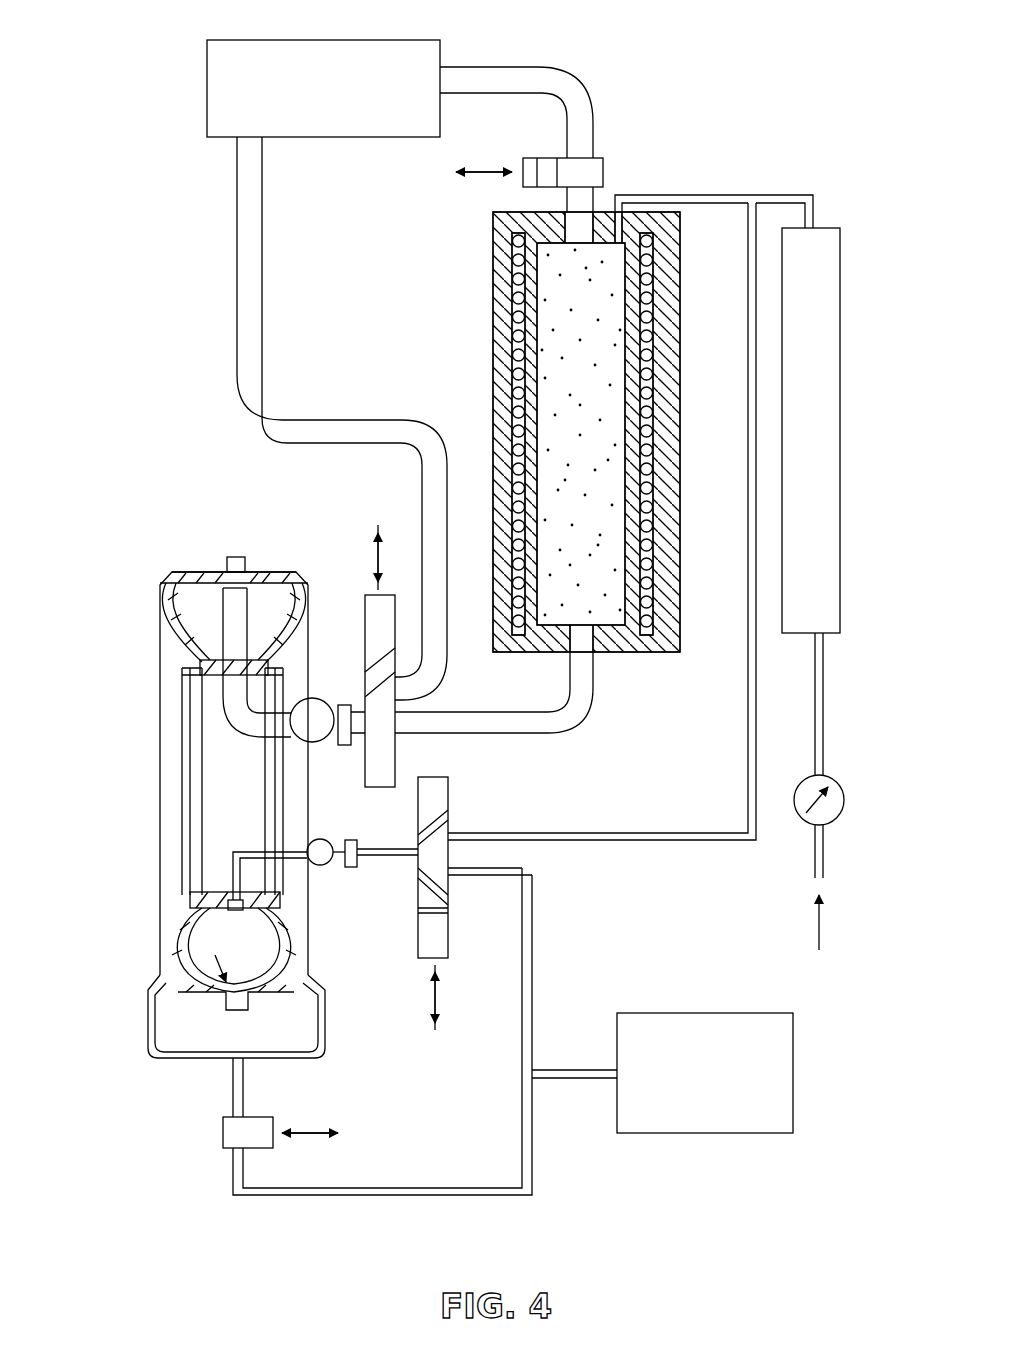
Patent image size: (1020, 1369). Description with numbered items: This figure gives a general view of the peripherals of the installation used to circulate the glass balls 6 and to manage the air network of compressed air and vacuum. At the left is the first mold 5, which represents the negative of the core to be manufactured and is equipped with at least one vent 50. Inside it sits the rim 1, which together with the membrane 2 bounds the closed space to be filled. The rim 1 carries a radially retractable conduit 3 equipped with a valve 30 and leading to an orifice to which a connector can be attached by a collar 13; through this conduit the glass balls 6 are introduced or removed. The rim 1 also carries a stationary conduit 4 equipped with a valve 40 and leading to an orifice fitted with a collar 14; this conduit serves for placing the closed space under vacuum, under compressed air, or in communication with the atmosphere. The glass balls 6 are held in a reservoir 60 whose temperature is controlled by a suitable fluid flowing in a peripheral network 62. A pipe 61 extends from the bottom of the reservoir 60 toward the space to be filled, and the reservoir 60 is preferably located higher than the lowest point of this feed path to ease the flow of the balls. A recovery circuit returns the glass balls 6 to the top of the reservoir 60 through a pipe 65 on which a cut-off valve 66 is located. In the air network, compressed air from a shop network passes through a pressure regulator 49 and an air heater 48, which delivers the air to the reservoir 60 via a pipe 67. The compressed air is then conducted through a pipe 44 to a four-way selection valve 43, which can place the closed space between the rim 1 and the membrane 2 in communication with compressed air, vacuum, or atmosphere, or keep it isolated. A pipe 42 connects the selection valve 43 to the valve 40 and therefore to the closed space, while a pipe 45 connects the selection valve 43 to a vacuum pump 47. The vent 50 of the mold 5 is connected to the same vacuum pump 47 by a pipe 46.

The pipe 65 is at (501, 75).
The cut-off valve 66 is at (604, 159).
The pipe 67 is at (656, 195).
The reservoir 60 is at (653, 250).
The peripheral network 62 is at (650, 262).
The glass balls 6 is at (590, 408).
The air heater 48 is at (840, 432).
The pressure regulator 49 is at (836, 805).
The pipe 44 is at (748, 725).
The pipe 61 is at (590, 730).
The four-way selection valve 43 is at (440, 795).
The pipe 42 is at (394, 858).
The pipe 45 is at (534, 952).
The vacuum pump 47 is at (724, 1082).
The pipe 46 is at (392, 1197).
The collar 13 is at (343, 748).
The collar 14 is at (357, 843).
The valve 40 is at (307, 850).
The valve 30 is at (302, 742).
The radially retractable conduit 3 is at (243, 712).
The rim 1 is at (200, 670).
The stationary conduit 4 is at (228, 872).
The first mold 5 is at (170, 566).
The vent 50 is at (166, 985).
The membrane 2 is at (213, 952).